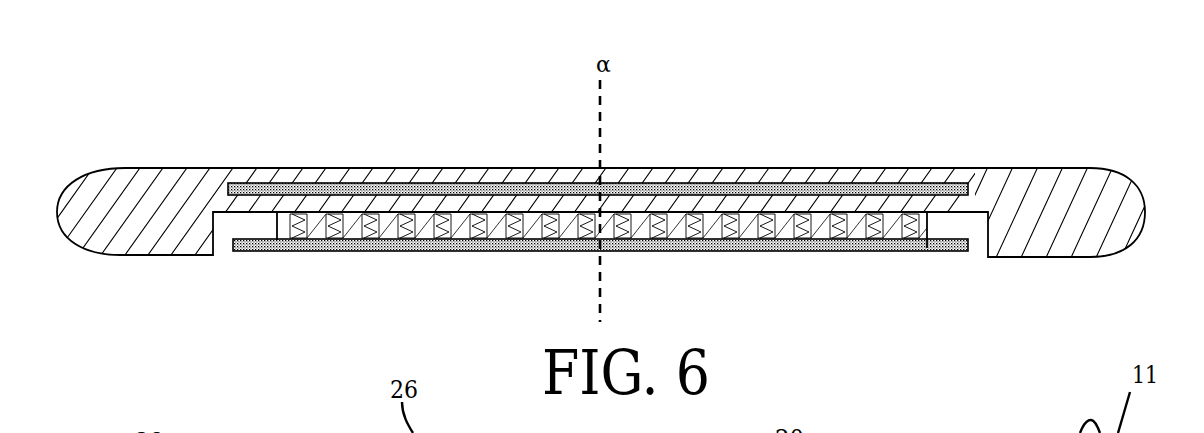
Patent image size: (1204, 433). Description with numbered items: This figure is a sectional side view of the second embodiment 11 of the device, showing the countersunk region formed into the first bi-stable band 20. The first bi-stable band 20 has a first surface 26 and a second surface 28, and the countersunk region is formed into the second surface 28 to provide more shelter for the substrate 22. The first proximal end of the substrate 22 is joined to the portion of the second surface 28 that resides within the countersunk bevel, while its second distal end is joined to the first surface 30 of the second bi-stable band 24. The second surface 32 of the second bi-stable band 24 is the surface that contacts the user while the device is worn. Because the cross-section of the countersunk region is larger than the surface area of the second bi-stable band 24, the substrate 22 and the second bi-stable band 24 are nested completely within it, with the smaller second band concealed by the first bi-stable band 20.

The second embodiment 11 is at (985, 141).
The first bi-stable band 20 is at (653, 180).
The substrate 22 is at (927, 225).
The second bi-stable band 24 is at (373, 246).
The first surface 26 is at (447, 168).
The second surface 28 is at (335, 213).
The first surface 30 is at (268, 238).
The second surface 32 is at (863, 258).